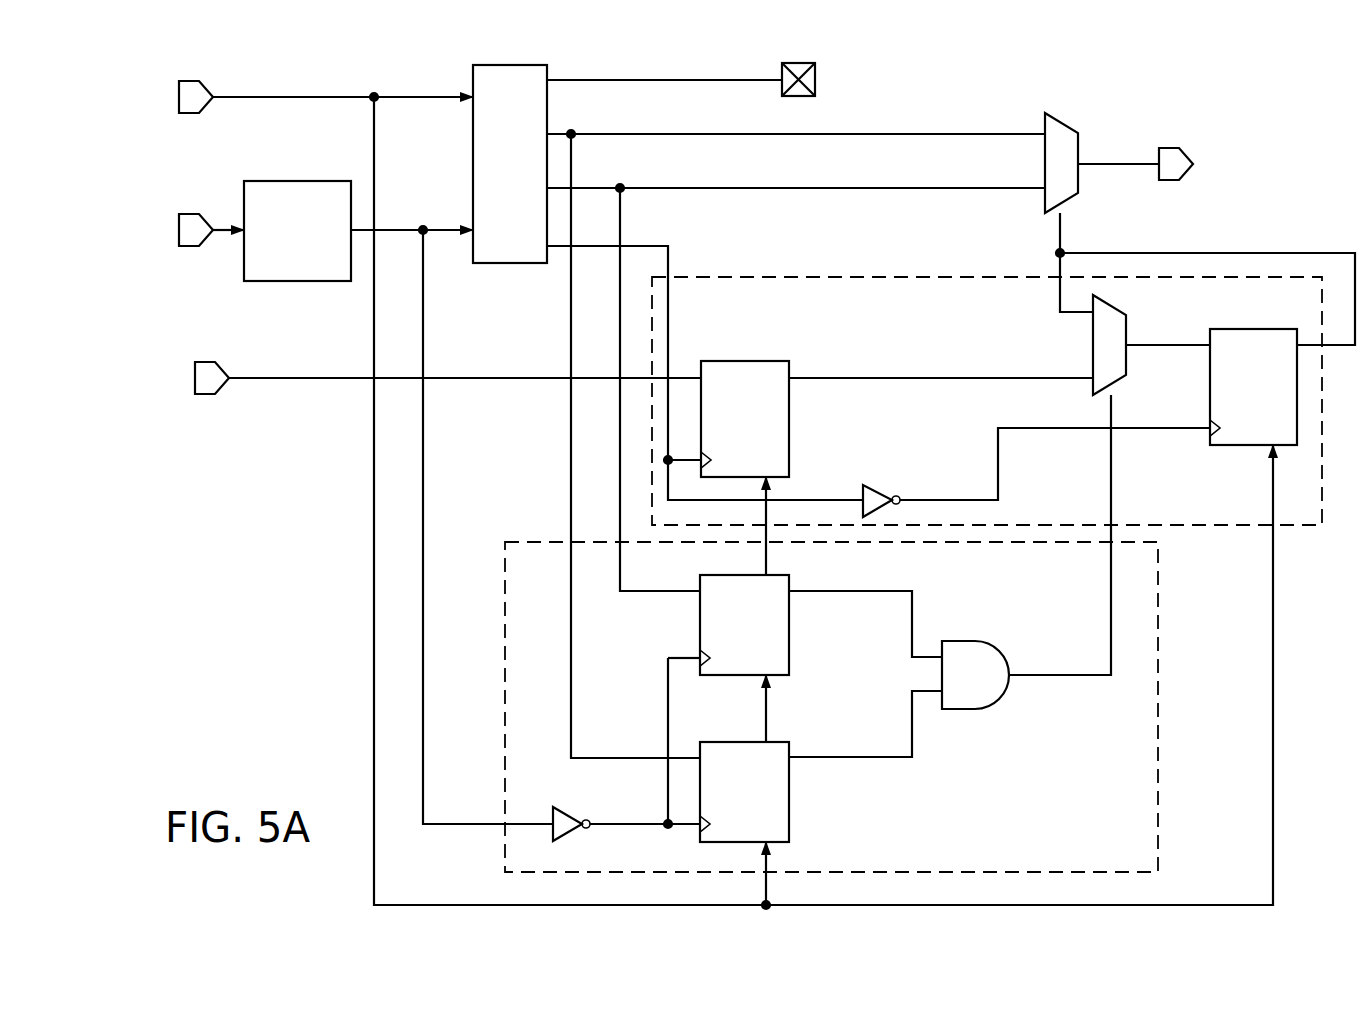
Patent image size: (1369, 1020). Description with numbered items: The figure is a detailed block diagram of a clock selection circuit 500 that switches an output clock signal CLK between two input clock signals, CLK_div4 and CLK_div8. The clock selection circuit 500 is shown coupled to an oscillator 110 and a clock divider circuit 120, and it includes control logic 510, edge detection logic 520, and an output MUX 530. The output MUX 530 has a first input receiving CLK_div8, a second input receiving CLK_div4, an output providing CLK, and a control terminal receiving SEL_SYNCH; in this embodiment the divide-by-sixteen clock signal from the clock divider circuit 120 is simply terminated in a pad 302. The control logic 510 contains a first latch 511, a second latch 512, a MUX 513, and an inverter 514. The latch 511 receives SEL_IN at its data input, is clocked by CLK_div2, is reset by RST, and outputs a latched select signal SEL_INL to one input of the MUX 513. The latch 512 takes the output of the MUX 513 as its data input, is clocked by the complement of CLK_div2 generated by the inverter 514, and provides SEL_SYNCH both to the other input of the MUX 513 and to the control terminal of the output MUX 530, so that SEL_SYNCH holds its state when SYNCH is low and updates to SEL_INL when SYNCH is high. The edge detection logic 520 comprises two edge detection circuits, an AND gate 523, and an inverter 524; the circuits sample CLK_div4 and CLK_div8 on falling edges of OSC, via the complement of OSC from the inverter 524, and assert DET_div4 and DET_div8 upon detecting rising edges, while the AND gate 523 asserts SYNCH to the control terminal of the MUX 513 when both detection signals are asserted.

The oscillator 110 is at (292, 181).
The clock divider circuit 120 is at (472, 72).
The pad 302 is at (815, 80).
The clock selection circuit 500 is at (262, 579).
The control logic 510 is at (905, 278).
The latch 511 is at (790, 410).
The latch 512 is at (1238, 450).
The MUX 513 is at (1093, 330).
The inverter 514 is at (872, 485).
The edge detection logic 520 is at (1158, 725).
The AND gate 523 is at (965, 641).
The inverter 524 is at (565, 808).
The output MUX 530 is at (1060, 113).